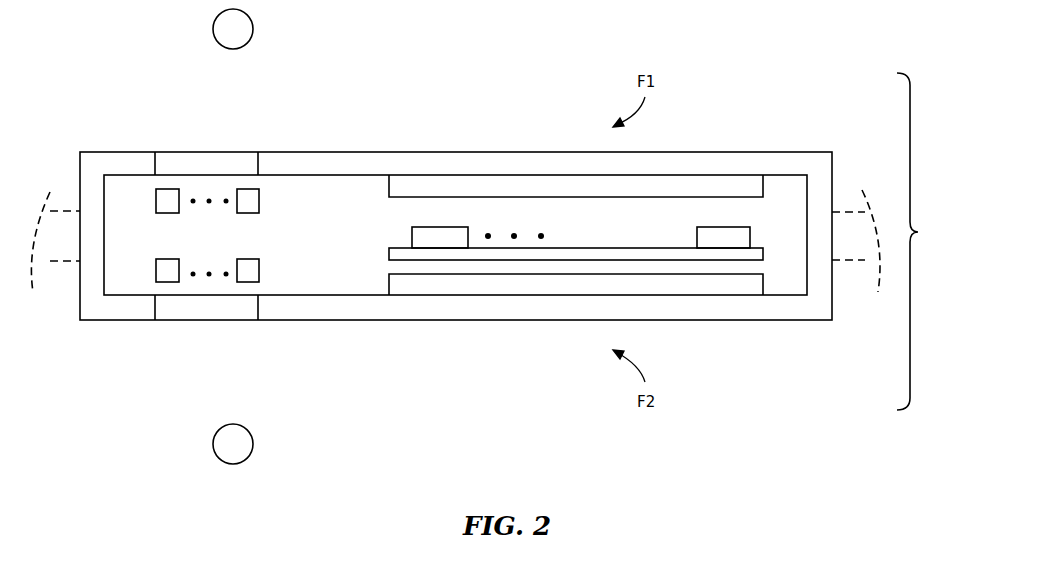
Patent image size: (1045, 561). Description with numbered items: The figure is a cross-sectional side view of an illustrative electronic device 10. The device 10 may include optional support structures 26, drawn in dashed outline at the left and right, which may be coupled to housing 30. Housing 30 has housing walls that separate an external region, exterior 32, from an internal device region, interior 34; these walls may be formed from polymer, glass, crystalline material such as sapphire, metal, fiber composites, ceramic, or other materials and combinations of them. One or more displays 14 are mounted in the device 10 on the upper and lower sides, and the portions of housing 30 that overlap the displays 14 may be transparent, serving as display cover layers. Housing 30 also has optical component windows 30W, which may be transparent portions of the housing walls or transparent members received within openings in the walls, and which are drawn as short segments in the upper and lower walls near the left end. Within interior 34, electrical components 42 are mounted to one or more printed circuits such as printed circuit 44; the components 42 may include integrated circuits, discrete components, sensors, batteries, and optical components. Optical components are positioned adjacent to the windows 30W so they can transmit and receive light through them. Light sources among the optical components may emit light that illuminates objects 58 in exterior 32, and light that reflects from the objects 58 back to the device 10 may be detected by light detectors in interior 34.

The electronic device 10 is at (923, 241).
The display 14 is at (763, 193).
The support structures 26 is at (57, 262).
The housing 30 is at (436, 310).
The optical component windows 30W is at (153, 160).
The exterior 32 is at (435, 216).
The interior 34 is at (140, 248).
The electrical components 42 is at (412, 232).
The printed circuit 44 is at (389, 253).
The objects 58 is at (253, 26).